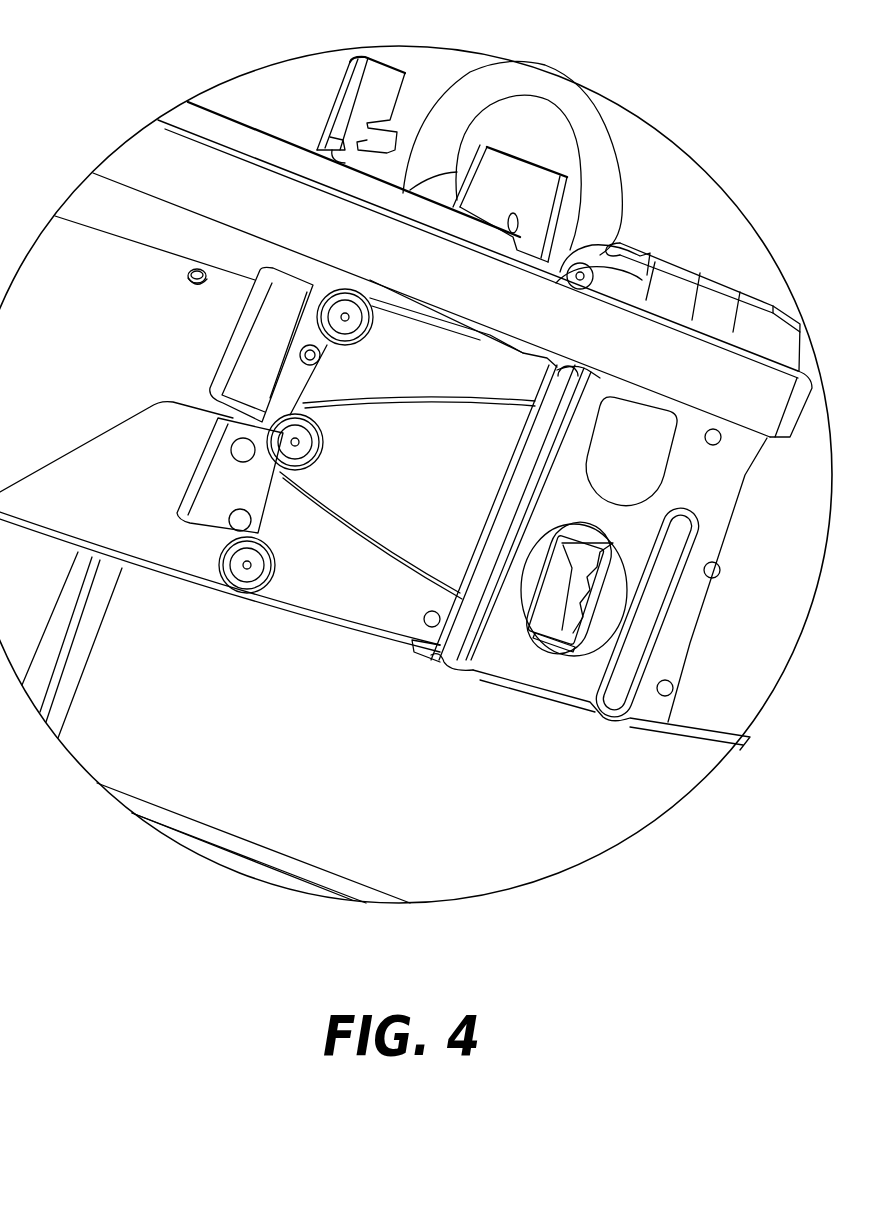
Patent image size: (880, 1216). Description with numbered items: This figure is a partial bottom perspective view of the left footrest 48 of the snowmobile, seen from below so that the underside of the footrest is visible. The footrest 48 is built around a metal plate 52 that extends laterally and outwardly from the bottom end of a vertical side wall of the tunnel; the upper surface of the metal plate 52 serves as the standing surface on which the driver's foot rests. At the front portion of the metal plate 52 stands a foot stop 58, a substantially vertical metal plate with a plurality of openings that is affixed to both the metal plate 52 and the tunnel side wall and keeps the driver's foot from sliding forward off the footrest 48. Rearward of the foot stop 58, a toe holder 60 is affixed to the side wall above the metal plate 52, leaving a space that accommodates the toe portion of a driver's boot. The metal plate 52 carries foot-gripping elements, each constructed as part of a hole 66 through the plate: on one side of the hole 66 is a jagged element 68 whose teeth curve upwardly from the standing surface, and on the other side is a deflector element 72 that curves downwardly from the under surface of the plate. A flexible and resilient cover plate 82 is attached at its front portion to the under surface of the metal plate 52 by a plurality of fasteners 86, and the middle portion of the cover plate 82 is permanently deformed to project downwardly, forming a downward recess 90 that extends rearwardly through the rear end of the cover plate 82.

The footrest 48 is at (201, 600).
The metal plate 52 is at (669, 338).
The foot stop 58 is at (378, 86).
The toe holder 60 is at (517, 168).
The hole 66 is at (542, 628).
The jagged element 68 is at (586, 628).
The deflector element 72 is at (553, 630).
The cover plate 82 is at (328, 590).
The fasteners 86 is at (242, 586).
The downward recess 90 is at (417, 540).